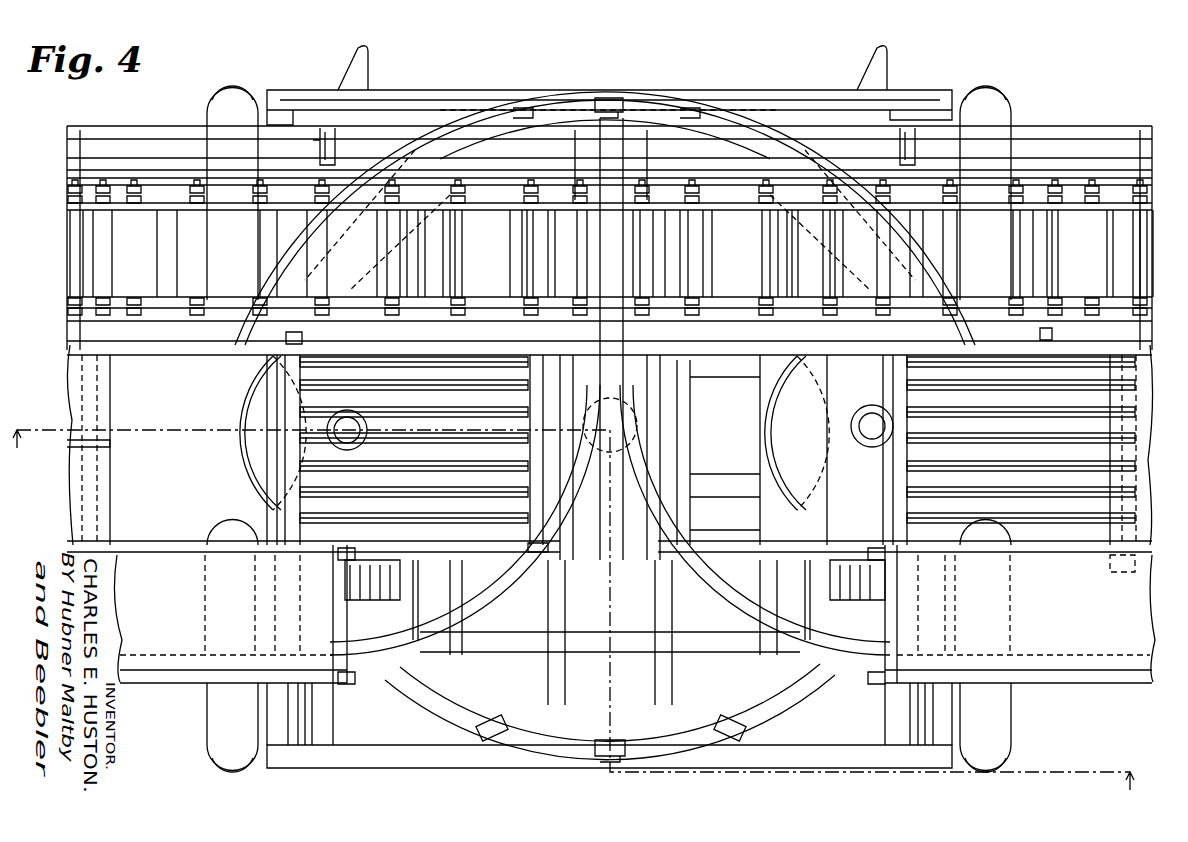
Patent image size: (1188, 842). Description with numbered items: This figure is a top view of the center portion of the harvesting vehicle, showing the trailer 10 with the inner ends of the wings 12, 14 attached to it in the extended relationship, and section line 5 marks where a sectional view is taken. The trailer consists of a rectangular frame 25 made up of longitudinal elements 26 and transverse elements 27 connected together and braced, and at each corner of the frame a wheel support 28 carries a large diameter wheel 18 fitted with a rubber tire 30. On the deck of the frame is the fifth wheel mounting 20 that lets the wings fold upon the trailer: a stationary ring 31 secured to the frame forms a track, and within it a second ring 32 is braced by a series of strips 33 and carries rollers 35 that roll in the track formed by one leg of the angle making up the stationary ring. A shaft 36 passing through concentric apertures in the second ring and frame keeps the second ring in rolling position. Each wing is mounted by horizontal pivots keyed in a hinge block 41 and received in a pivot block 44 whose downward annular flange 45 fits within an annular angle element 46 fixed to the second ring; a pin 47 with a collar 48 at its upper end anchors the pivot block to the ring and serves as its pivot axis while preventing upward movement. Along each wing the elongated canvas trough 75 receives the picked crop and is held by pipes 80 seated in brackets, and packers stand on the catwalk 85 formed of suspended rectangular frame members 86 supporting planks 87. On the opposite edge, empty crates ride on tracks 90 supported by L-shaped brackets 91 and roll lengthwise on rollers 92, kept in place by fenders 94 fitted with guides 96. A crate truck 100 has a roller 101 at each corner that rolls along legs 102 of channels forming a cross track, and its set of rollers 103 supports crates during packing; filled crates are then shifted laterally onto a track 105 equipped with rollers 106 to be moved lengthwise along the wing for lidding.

The section line 5 is at (572, 622).
The trailer 10 is at (735, 84).
The wing 12 is at (118, 125).
The wing 14 is at (1089, 121).
The wheel 18 is at (244, 90).
The fifth wheel mounting 20 is at (580, 100).
The rectangular frame 25 is at (402, 770).
The longitudinal element 26 is at (314, 729).
The transverse element 27 is at (425, 95).
The wheel support 28 is at (298, 708).
The rubber tire 30 is at (217, 104).
The stationary ring 31 is at (428, 713).
The second ring 32 is at (622, 714).
The strip 33 is at (456, 585).
The roller 35 is at (617, 98).
The shaft 36 is at (615, 450).
The hinge block 41 is at (372, 232).
The pivot block 44 is at (375, 262).
The annular flange 45 is at (243, 406).
The annular angle element 46 is at (246, 452).
The pin 47 is at (355, 420).
The collar 48 is at (858, 440).
The canvas trough 75 is at (160, 683).
The pipe 80 is at (355, 552).
The catwalk 85 is at (136, 408).
The frame member 86 is at (1115, 572).
The plank 87 is at (110, 446).
The track 90 is at (125, 204).
The L-shaped bracket 91 is at (336, 150).
The roller 92 is at (196, 204).
The fender 94 is at (332, 140).
The guide 96 is at (163, 158).
The crate truck 100 is at (288, 486).
The roller 101 is at (285, 340).
The leg 102 is at (212, 356).
The roller 103 is at (476, 440).
The track 105 is at (122, 178).
The roller 106 is at (160, 244).